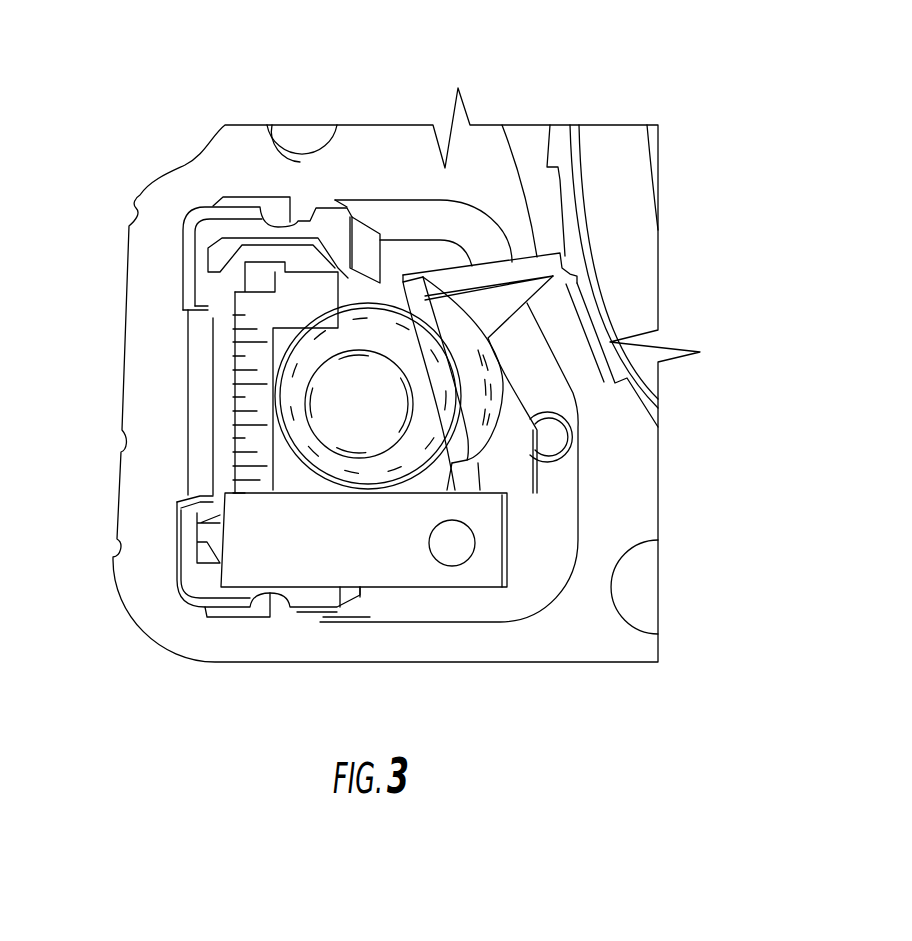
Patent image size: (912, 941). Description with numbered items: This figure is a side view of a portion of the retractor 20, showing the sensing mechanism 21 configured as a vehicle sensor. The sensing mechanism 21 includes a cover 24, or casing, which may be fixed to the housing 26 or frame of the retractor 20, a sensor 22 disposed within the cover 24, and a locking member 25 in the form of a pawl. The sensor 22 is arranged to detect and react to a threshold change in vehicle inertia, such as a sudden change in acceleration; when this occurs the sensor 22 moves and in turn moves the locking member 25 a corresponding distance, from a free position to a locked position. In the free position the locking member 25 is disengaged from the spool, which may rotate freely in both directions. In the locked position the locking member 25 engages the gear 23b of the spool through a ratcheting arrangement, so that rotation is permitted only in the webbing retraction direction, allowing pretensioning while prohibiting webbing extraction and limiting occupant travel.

The retractor 20 is at (543, 87).
The sensing mechanism 21 is at (160, 447).
The sensor 22 is at (355, 468).
The gear 23b is at (575, 263).
The cover 24 is at (565, 510).
The locking member 25 is at (504, 124).
The housing 26 is at (373, 127).